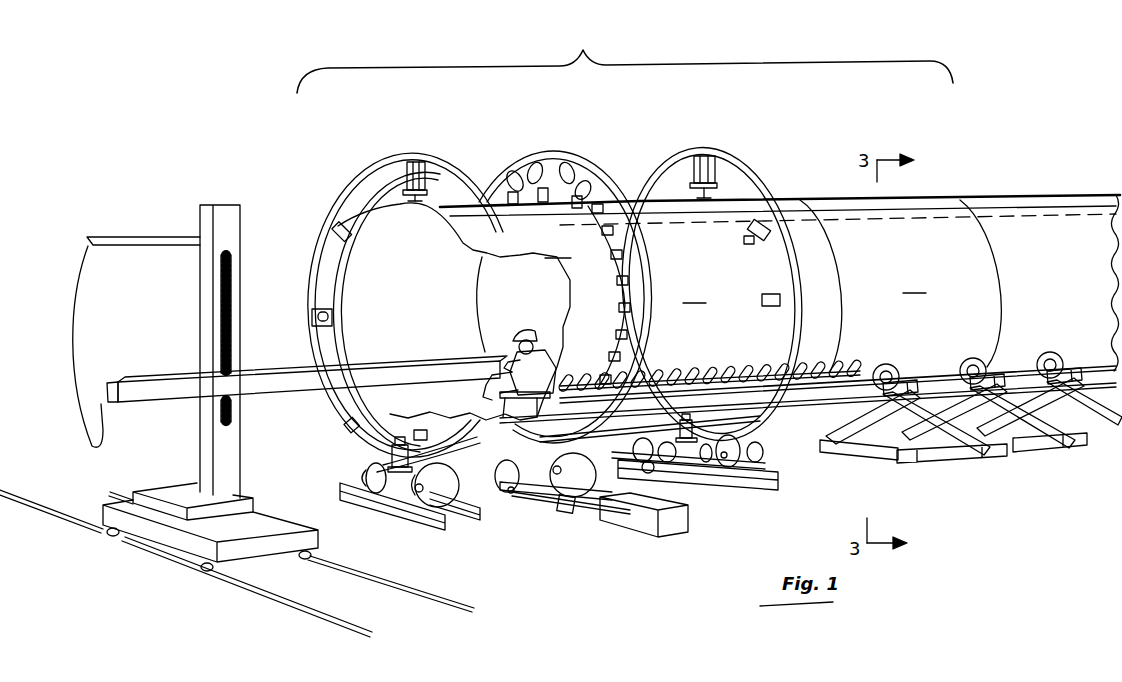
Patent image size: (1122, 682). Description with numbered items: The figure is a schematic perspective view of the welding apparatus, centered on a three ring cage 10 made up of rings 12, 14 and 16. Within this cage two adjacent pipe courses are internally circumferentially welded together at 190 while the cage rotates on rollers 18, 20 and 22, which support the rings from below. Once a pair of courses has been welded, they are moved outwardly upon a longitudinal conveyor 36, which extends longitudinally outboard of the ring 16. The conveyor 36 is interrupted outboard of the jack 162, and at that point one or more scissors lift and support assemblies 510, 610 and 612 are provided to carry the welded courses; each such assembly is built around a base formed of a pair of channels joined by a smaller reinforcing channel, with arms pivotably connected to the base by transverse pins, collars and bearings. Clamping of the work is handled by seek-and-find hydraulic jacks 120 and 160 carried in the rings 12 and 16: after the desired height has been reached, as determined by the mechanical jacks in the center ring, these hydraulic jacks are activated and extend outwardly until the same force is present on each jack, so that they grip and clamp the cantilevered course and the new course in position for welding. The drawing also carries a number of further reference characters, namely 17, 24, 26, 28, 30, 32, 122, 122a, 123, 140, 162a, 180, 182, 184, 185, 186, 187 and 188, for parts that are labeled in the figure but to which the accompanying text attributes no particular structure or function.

The three ring cage 10 is at (861, 46).
The ring 12 is at (400, 144).
The ring 14 is at (530, 143).
The ring 16 is at (722, 140).
The ring assembly 17 is at (583, 50).
The roller 18 is at (568, 513).
The roller 20 is at (616, 487).
The roller 22 is at (718, 453).
The I-beam tracks 24 is at (444, 526).
The drive unit 26 is at (647, 470).
The control box 28 is at (666, 529).
The connecting rod 30 is at (580, 510).
The coupling 32 is at (546, 505).
The longitudinal conveyor 36 is at (847, 345).
The seek-and-find hydraulic jack 120 is at (402, 177).
The jack pedestal 122 is at (352, 479).
The saddle 122a is at (352, 436).
The slide block 123 is at (416, 433).
The spacer blocks 140 is at (575, 198).
The seek-and-find hydraulic jack 160 is at (719, 170).
The jack 162 is at (645, 460).
The lower support 162a is at (842, 457).
The boom stand 180 is at (180, 351).
The boom 182 is at (184, 401).
The base 184 is at (167, 538).
The column 185 is at (202, 464).
The wheels 186 is at (205, 568).
The rails 187 is at (322, 611).
The rack 188 is at (227, 333).
The internal circumferential weld location 190 is at (466, 394).
The scissors lift and support assembly 510 is at (899, 468).
The scissors lift and support assembly 610 is at (946, 450).
The scissors lift and support assembly 612 is at (1011, 438).